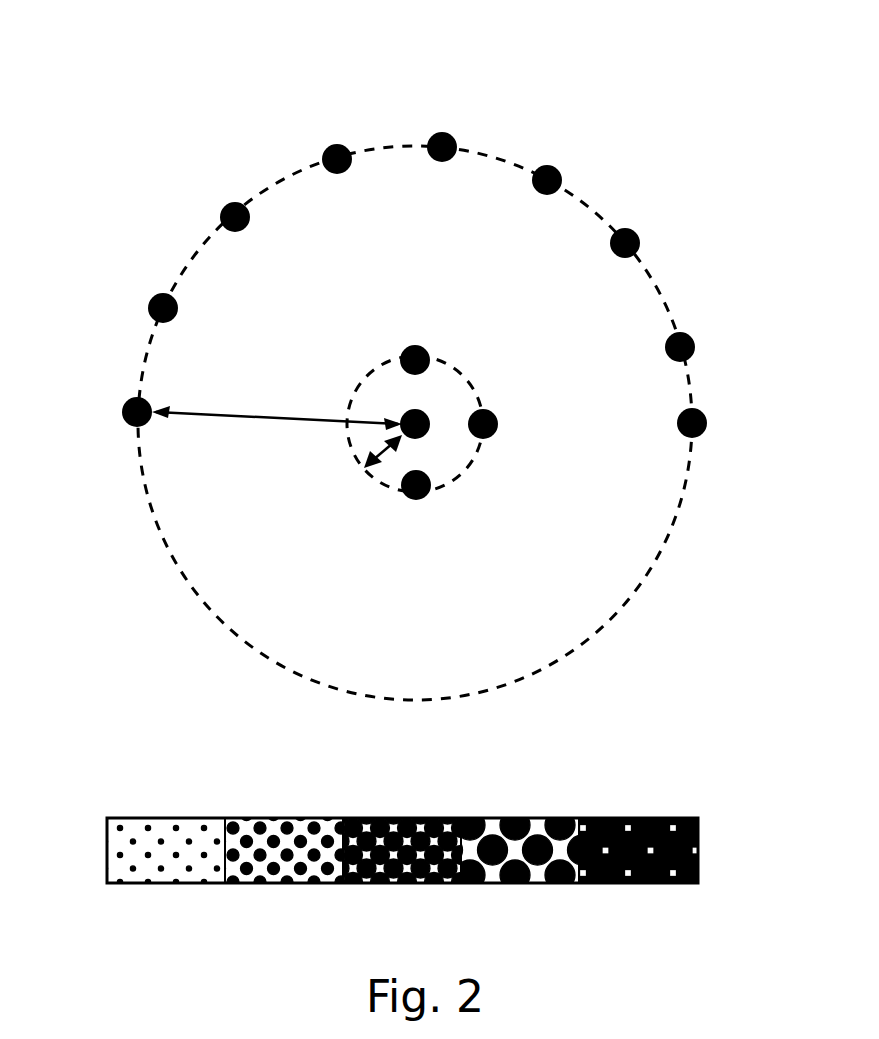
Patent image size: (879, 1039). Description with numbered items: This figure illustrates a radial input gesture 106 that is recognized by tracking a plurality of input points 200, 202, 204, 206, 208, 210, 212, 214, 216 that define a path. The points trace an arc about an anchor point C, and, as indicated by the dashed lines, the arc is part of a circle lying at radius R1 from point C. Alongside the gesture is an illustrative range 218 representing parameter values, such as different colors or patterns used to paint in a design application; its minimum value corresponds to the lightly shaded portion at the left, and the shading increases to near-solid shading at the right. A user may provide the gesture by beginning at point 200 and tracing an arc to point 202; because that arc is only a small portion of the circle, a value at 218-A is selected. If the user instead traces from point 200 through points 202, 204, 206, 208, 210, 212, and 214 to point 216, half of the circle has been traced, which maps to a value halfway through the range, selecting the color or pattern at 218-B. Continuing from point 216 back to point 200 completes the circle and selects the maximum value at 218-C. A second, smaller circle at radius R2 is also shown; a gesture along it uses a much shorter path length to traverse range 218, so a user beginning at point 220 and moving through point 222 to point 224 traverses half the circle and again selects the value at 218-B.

The radial input gesture 106 is at (602, 62).
The input point 200 is at (133, 402).
The input point 202 is at (160, 297).
The input point 204 is at (232, 206).
The input point 206 is at (333, 150).
The input point 208 is at (447, 140).
The input point 210 is at (553, 173).
The input point 212 is at (631, 236).
The input point 214 is at (686, 340).
The input point 216 is at (699, 418).
The input point 220 is at (421, 352).
The input point 222 is at (491, 420).
The input point 224 is at (408, 494).
The range 218 is at (699, 856).
The range value 218-A is at (137, 808).
The range value 218-B is at (392, 808).
The range value 218-C is at (682, 808).
The radius R1 is at (277, 426).
The radius R2 is at (364, 460).
The anchor point C is at (422, 435).